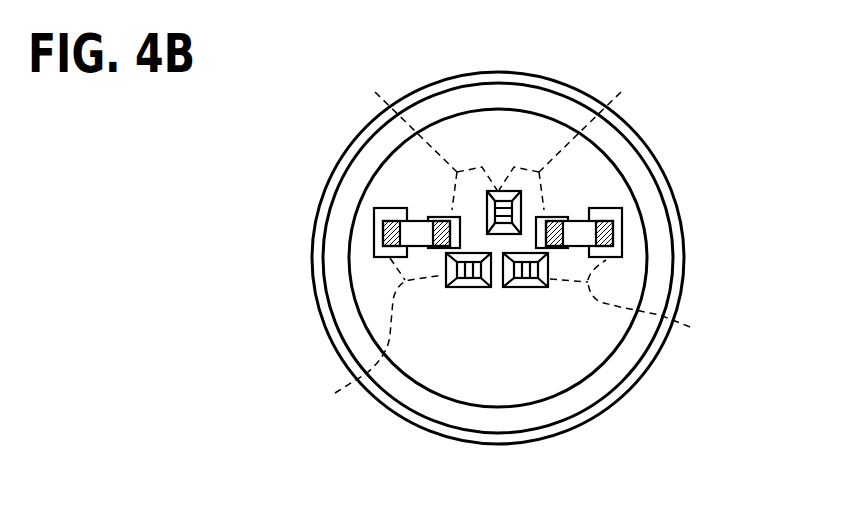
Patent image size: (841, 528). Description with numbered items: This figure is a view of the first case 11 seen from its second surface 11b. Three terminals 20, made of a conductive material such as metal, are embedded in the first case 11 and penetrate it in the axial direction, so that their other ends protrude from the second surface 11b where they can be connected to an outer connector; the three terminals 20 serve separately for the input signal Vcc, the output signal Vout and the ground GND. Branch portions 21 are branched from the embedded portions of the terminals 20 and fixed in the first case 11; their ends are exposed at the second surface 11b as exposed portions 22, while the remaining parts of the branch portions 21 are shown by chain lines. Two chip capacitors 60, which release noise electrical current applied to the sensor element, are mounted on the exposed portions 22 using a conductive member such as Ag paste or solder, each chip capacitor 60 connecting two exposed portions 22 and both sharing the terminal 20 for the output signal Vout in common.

The first case 11 is at (649, 150).
The second surface 11b is at (527, 376).
The terminal 20 is at (503, 208).
The branch portion 21 is at (517, 240).
The exposed portion 22 is at (457, 220).
The chip capacitor 60 is at (418, 232).